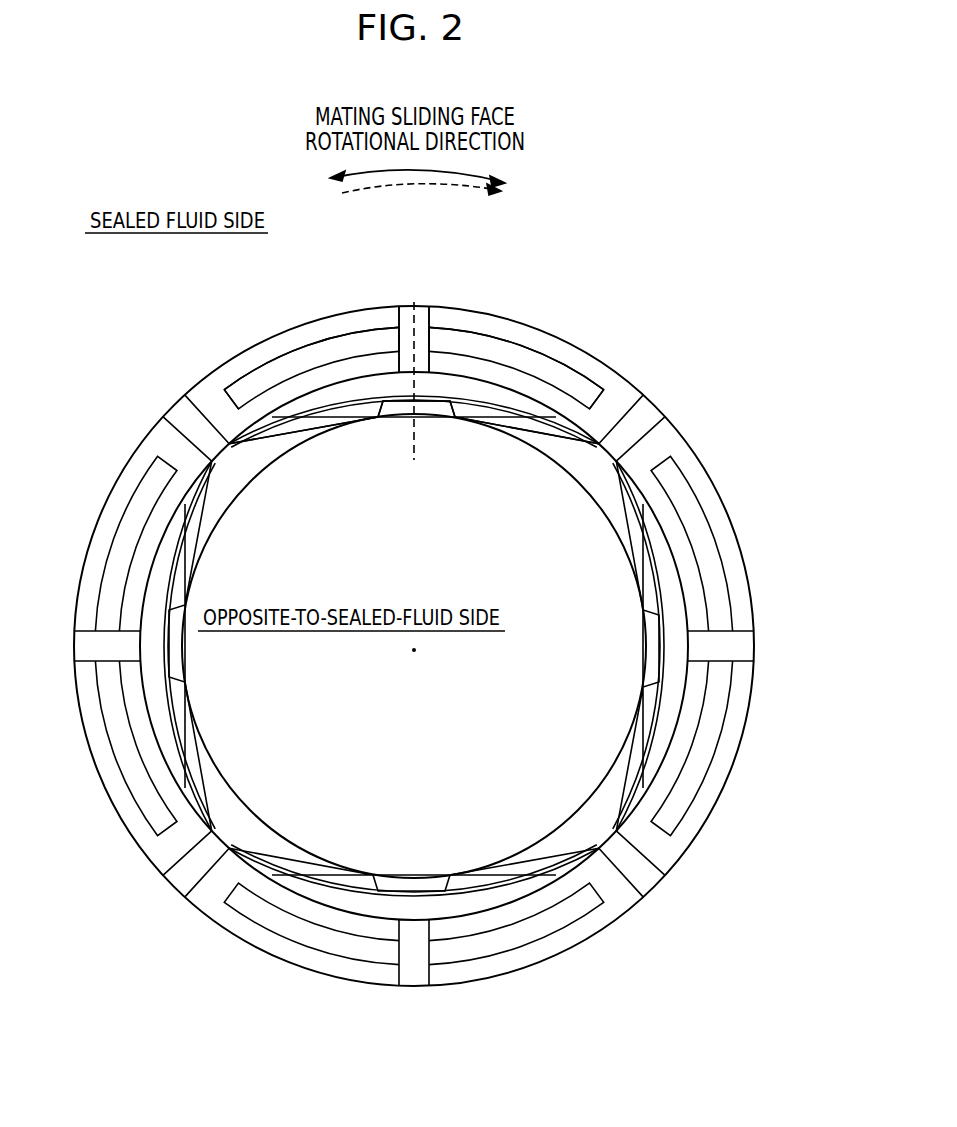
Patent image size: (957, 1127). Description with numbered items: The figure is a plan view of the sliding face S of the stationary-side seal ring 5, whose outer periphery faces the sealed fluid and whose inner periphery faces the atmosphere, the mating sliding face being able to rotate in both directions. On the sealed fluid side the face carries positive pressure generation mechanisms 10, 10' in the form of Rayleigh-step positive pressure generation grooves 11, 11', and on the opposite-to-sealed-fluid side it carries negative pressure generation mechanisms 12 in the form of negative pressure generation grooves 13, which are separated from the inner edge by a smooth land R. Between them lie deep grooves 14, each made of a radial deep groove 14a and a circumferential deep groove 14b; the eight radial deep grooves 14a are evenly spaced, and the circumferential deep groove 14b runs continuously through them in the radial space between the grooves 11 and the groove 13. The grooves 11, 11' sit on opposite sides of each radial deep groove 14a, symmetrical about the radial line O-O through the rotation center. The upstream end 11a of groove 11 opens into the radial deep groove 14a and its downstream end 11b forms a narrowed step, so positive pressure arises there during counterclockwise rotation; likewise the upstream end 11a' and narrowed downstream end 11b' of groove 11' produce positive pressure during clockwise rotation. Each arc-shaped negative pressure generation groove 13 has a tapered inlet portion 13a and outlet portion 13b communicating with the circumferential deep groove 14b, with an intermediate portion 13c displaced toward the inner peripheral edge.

The stationary-side seal ring 5 is at (625, 380).
The sliding face S is at (636, 383).
The positive pressure generation mechanism 10 is at (496, 374).
The positive pressure generation mechanism 10' is at (516, 312).
The positive pressure generation groove 11 is at (442, 634).
The positive pressure generation groove 11' is at (413, 621).
The upstream end 11a is at (379, 287).
The upstream end 11a' is at (444, 394).
The downstream end 11b is at (187, 372).
The downstream end 11b' is at (545, 446).
The negative pressure generation mechanism 12 is at (375, 424).
The negative pressure generation groove 13 is at (355, 420).
The inlet portion 13a is at (598, 446).
The outlet portion 13b is at (272, 432).
The intermediate portion 13c is at (403, 403).
The deep groove 14 is at (448, 251).
The radial deep groove 14a is at (431, 372).
The circumferential deep groove 14b is at (433, 345).
The land R is at (306, 385).
The radial line O- O is at (415, 378).